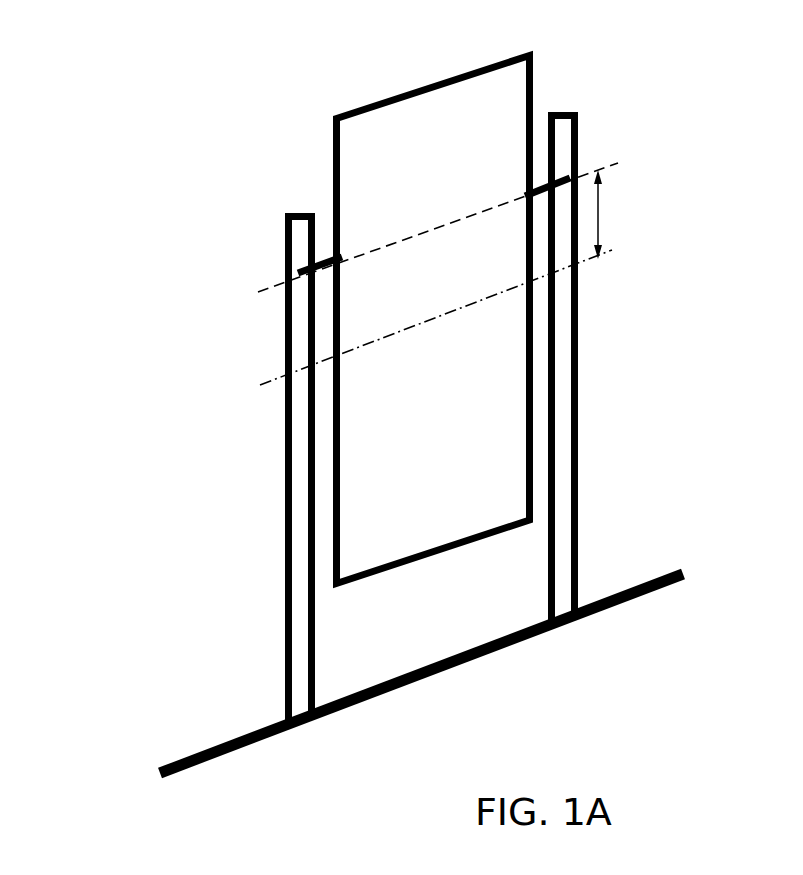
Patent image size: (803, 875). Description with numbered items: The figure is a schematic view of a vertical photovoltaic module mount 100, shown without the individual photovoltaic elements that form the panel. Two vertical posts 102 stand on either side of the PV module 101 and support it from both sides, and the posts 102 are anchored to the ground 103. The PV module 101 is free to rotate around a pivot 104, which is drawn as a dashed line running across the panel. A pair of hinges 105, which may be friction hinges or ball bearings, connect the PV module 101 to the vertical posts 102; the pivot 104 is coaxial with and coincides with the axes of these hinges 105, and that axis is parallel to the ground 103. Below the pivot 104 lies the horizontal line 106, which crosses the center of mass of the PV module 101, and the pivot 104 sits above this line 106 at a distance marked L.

The vertical photovoltaic module mount 100 is at (127, 65).
The PV module 101 is at (390, 195).
The vertical posts 102 is at (297, 614).
The ground 103 is at (193, 753).
The pivot 104 is at (268, 292).
The hinges 105 is at (546, 183).
The horizontal line 106 is at (384, 342).